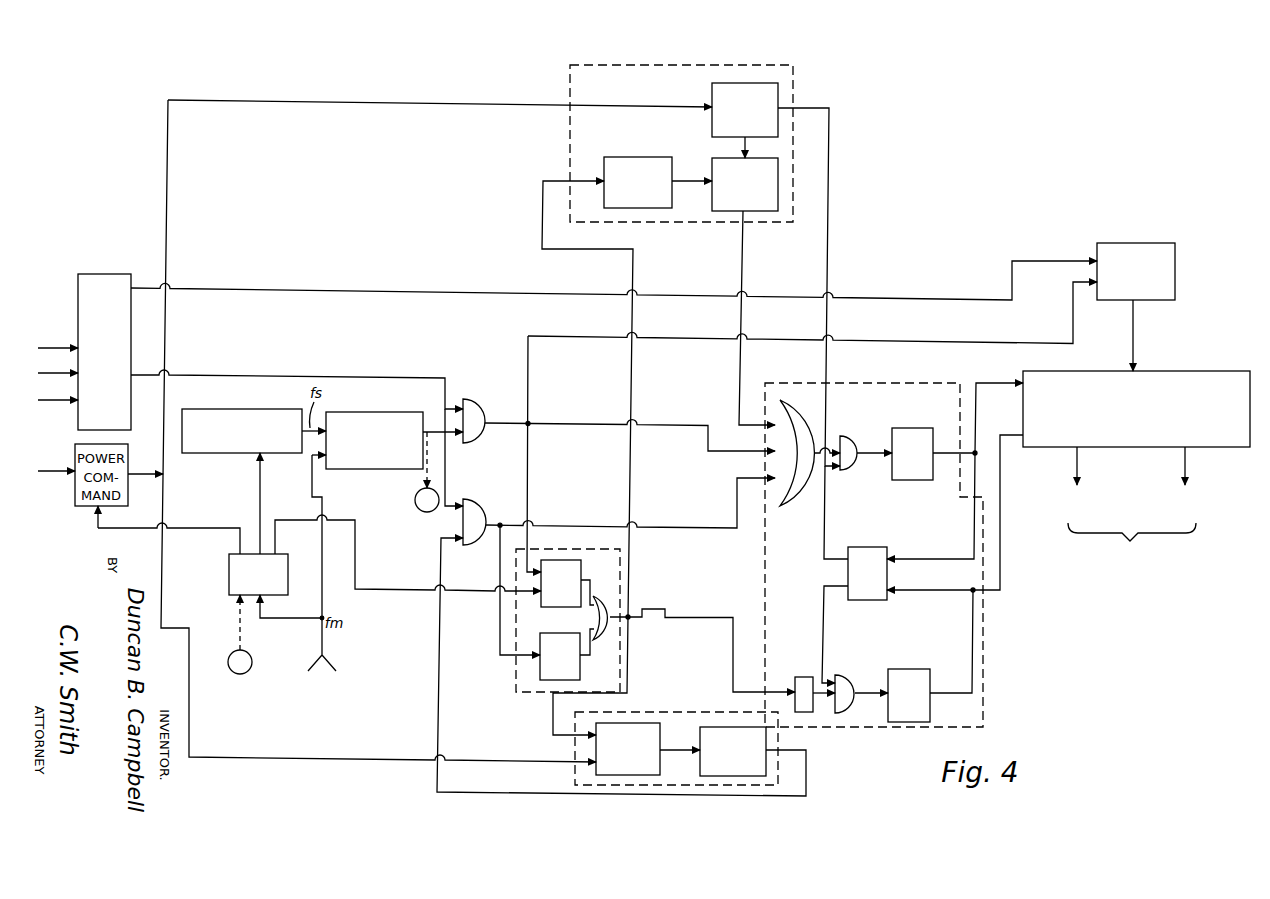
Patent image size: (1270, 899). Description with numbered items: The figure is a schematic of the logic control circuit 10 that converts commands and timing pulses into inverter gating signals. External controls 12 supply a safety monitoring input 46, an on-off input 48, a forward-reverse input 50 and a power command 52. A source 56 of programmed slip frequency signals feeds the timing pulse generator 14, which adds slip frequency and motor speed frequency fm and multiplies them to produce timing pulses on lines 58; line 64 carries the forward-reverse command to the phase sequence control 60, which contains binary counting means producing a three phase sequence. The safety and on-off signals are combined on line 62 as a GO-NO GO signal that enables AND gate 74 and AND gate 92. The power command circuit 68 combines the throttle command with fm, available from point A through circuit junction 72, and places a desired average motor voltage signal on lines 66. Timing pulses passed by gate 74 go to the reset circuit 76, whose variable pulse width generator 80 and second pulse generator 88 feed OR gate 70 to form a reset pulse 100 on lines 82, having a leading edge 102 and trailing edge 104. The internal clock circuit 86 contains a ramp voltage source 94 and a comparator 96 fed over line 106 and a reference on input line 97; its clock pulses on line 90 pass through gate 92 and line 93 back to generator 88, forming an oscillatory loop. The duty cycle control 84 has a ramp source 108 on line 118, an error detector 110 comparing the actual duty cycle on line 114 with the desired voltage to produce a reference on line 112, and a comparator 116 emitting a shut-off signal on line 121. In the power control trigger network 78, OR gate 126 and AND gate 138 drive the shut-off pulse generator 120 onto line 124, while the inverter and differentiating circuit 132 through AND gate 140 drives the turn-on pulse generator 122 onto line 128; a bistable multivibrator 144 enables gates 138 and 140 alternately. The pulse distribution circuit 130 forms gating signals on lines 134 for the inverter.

The logic control circuit 10 is at (468, 272).
The external controls 12 is at (90, 258).
The timing pulse generator 14 is at (404, 418).
The safety monitoring input 46 is at (68, 348).
The on-off input 48 is at (68, 373).
The forward-reverse input 50 is at (44, 400).
The power command 52 is at (44, 471).
The source of programmed slip frequency signals 56 is at (244, 409).
The output lines 58 is at (550, 336).
The phase sequence control 60 is at (1112, 243).
The line 62 is at (285, 376).
The line 64 is at (300, 290).
The output lines 66 is at (366, 103).
The power command circuit 68 is at (136, 470).
The OR gate 70 is at (596, 616).
The circuit junction 72 is at (229, 562).
The AND logic gate 74 is at (480, 408).
The reset circuit 76 is at (555, 549).
The power control trigger network 78 is at (960, 385).
The variable pulse width generator 80 is at (568, 568).
The output lines 82 is at (733, 617).
The duty cycle control circuit 84 is at (755, 65).
The internal clock circuit 86 is at (660, 712).
The second pulse generator circuit 88 is at (580, 672).
The output line 90 is at (438, 692).
The AND logic gate 92 is at (462, 522).
The line 93 is at (490, 555).
The ramp voltage source 94 is at (660, 735).
The comparator circuit 96 is at (748, 727).
The input line 97 is at (720, 727).
The reset pulse 100 is at (654, 608).
The leading edge 102 is at (630, 575).
The trailing edge 104 is at (668, 609).
The line 106 is at (678, 752).
The ramp voltage source 108 is at (632, 157).
The duty cycle error detector 110 is at (712, 87).
The line 112 is at (738, 146).
The line 114 is at (829, 230).
The comparator circuit 116 is at (778, 184).
The line 118 is at (684, 181).
The shut-off pulse generator 120 is at (906, 428).
The line 121 is at (744, 252).
The turn-on pulse generator 122 is at (906, 669).
The line 124 is at (942, 455).
The OR gate 126 is at (798, 495).
The line 128 is at (946, 693).
The pulse distribution circuit 130 is at (1084, 371).
The inverter and differentiating circuit 132 is at (798, 680).
The lines 134 is at (1077, 455).
The AND logic gate 138 is at (852, 470).
The AND gate 140 is at (844, 676).
The bistable multivibrator circuit 144 is at (882, 547).